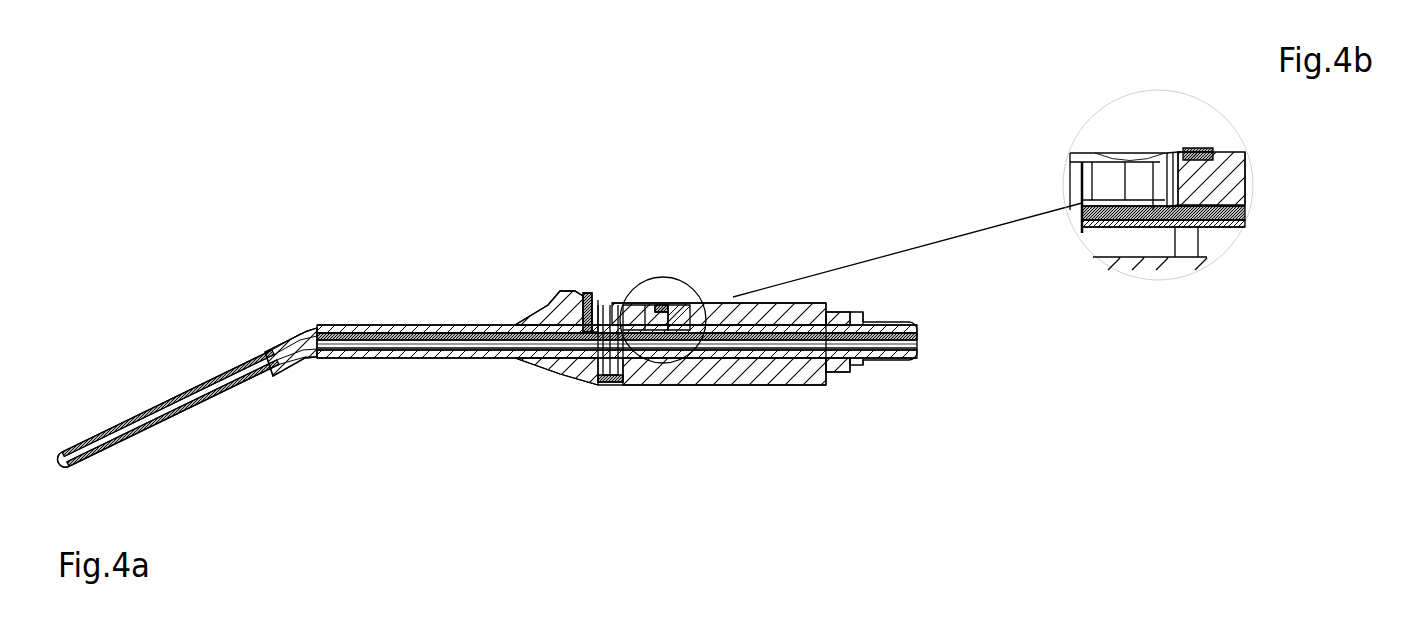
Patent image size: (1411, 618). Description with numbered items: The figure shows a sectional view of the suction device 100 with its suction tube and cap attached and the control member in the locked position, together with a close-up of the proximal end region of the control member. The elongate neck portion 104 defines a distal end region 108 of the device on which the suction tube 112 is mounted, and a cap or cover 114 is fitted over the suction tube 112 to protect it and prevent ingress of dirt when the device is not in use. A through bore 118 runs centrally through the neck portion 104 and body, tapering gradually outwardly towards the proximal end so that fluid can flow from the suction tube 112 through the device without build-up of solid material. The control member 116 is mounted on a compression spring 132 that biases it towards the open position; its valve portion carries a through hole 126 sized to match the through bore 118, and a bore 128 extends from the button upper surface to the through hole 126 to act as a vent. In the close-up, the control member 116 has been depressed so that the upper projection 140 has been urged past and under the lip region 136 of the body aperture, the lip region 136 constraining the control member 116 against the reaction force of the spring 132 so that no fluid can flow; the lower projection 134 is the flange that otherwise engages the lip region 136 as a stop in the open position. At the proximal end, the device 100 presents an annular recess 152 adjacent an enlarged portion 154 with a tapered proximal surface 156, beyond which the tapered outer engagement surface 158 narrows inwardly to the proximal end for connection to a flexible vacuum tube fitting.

In FIG. 4A, the suction device 100 is at (745, 220).
In FIG. 4A, the neck portion 104 is at (405, 362).
In FIG. 4A, the distal end region 108 is at (285, 328).
In FIG. 4A, the suction tube 112 is at (215, 400).
In FIG. 4A, the cap or cover 114 is at (164, 400).
In FIG. 4A, the control member 116 is at (605, 292).
In FIG. 4A, the through bore 118 is at (763, 340).
In FIG. 4B, the through bore 118 is at (1138, 236).
In FIG. 4A, the through hole 126 is at (612, 387).
In FIG. 4A, the bore 128 is at (578, 292).
In FIG. 4B, the compression spring 132 is at (1082, 163).
In FIG. 4B, the lower projection 134 is at (1197, 218).
In FIG. 4B, the lip region 136 is at (1170, 148).
In FIG. 4B, the upper projection 140 is at (1167, 150).
In FIG. 4A, the annular recess 152 is at (832, 372).
In FIG. 4A, the enlarged portion 154 is at (857, 372).
In FIG. 4A, the tapered proximal surface 156 is at (868, 372).
In FIG. 4A, the tapered outer engagement surface 158 is at (895, 368).